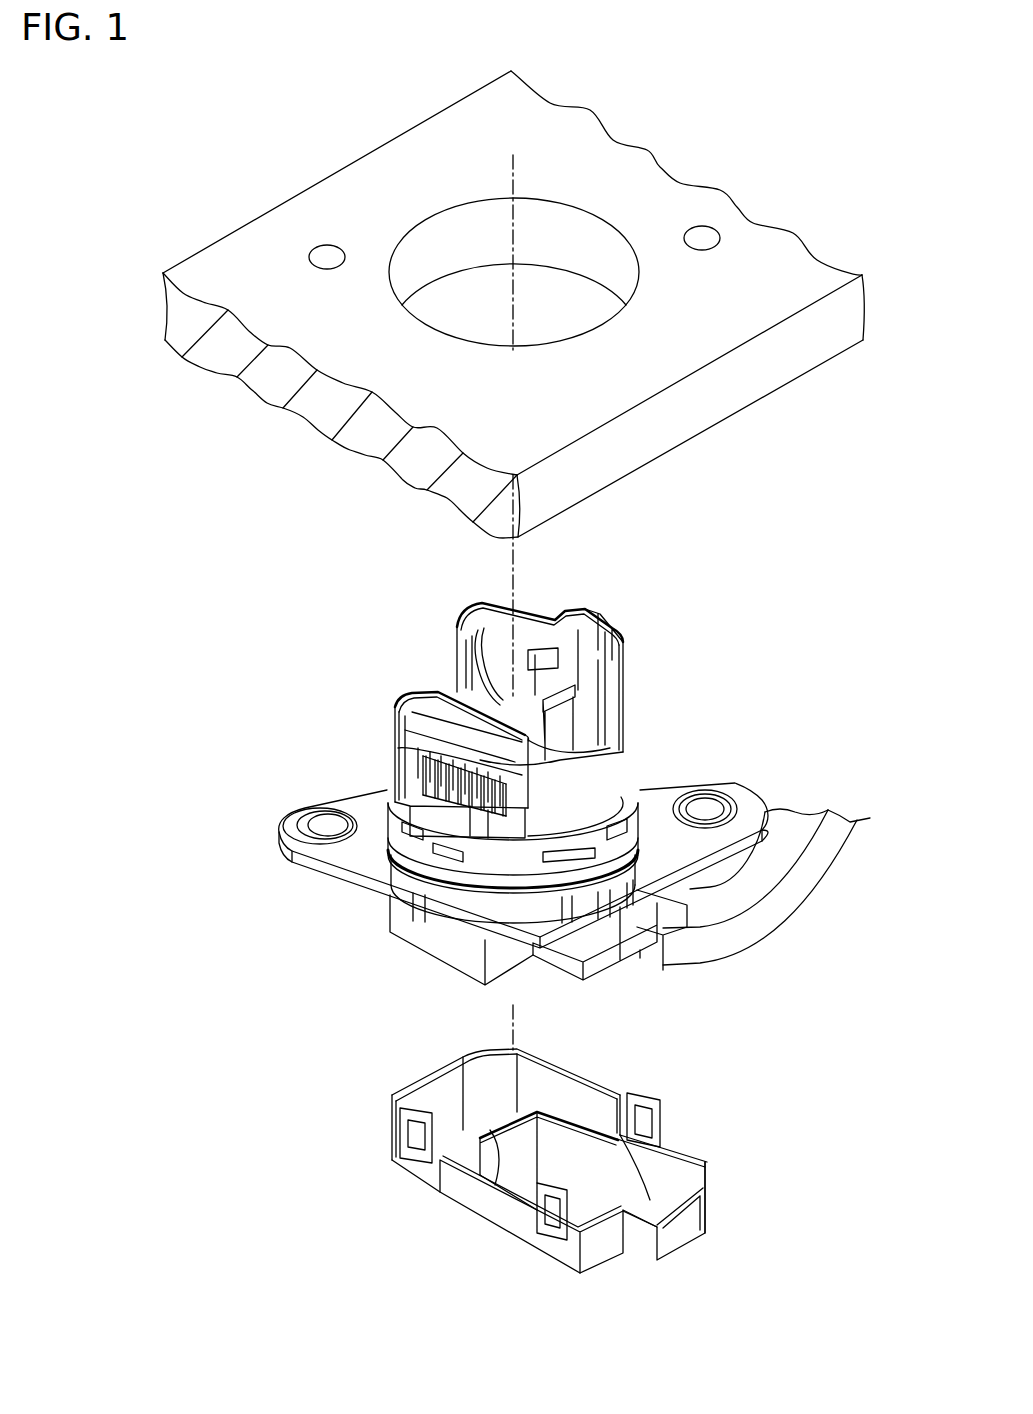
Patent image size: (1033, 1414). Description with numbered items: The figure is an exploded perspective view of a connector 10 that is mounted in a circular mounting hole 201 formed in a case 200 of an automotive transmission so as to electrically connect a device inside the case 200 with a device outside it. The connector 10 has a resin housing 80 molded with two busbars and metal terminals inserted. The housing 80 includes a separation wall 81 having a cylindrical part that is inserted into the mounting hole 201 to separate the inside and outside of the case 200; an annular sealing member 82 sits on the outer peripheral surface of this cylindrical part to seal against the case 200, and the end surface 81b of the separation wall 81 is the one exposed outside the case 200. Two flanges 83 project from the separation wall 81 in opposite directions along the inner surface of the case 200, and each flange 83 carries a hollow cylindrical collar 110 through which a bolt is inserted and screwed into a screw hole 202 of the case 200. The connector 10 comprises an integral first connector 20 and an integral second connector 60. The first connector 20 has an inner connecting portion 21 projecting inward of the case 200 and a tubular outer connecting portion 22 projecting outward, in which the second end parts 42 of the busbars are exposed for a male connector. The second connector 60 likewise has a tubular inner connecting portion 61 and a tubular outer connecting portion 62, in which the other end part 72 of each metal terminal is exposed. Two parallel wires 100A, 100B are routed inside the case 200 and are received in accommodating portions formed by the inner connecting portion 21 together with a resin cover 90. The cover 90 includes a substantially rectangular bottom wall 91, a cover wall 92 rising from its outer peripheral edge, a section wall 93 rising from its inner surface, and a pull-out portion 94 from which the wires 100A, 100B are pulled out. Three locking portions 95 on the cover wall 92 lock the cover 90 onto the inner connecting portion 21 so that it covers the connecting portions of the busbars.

The connector 10 is at (815, 641).
The first connector 20 is at (572, 665).
The inner connecting portion 21 is at (597, 963).
The outer connecting portion 22 is at (627, 675).
The second end parts 42 is at (476, 634).
The second connector 60 is at (426, 742).
The inner connecting portion 61 is at (447, 963).
The outer connecting portion 62 is at (395, 723).
The another end part 72 is at (445, 743).
The housing 80 is at (650, 691).
The separation wall 81 is at (470, 897).
The another end surface 81b is at (613, 807).
The annular sealing member 82 is at (420, 860).
The flanges 83 is at (514, 842).
The cover 90 is at (690, 1084).
The bottom wall 91 is at (580, 1217).
The cover wall 92 is at (584, 1076).
The section wall 93 is at (507, 1150).
The pull-out portion 94 is at (692, 1222).
The locking portions 95 is at (408, 1125).
The wire 100A is at (733, 947).
The wire 100B is at (750, 883).
The hollow cylindrical collar 110 is at (315, 810).
The case 200 is at (302, 192).
The mounting hole 201 is at (565, 332).
The screw holes 202 is at (310, 258).